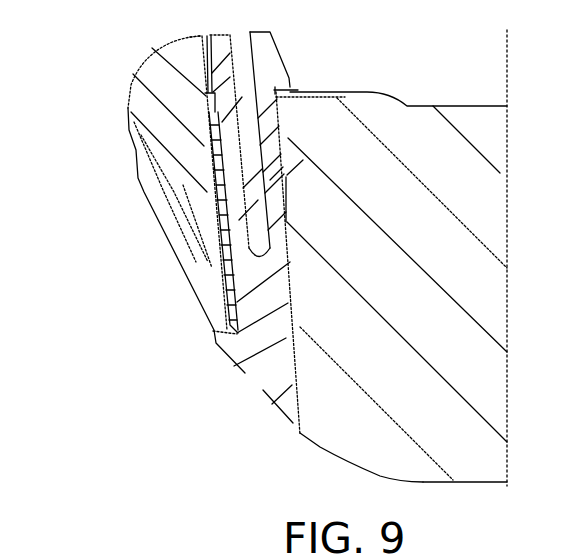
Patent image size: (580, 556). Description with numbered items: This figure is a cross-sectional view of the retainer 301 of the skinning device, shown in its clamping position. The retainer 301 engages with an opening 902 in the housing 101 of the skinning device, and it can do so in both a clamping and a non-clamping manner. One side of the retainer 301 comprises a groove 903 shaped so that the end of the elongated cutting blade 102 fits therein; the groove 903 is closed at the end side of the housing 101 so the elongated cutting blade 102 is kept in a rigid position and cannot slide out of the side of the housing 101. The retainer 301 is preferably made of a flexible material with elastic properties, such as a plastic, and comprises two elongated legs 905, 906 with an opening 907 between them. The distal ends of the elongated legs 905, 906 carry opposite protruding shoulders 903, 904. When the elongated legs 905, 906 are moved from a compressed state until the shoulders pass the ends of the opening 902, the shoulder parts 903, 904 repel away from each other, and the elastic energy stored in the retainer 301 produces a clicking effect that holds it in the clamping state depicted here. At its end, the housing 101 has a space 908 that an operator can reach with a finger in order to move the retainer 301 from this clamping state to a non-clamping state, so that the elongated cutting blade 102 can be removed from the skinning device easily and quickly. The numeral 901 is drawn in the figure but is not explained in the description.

The housing 101 is at (452, 229).
The elongated cutting blade 102 is at (220, 302).
The retainer 301 is at (284, 365).
The rounded head body 901 is at (135, 140).
The opening 902 is at (249, 429).
The groove 903 is at (192, 103).
The protruding shoulder 904 is at (292, 84).
The elongated leg 905 is at (279, 141).
The elongated leg 906 is at (287, 222).
The opening 907 is at (279, 122).
The space 908 is at (448, 86).